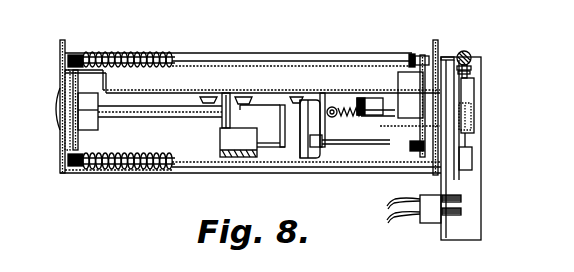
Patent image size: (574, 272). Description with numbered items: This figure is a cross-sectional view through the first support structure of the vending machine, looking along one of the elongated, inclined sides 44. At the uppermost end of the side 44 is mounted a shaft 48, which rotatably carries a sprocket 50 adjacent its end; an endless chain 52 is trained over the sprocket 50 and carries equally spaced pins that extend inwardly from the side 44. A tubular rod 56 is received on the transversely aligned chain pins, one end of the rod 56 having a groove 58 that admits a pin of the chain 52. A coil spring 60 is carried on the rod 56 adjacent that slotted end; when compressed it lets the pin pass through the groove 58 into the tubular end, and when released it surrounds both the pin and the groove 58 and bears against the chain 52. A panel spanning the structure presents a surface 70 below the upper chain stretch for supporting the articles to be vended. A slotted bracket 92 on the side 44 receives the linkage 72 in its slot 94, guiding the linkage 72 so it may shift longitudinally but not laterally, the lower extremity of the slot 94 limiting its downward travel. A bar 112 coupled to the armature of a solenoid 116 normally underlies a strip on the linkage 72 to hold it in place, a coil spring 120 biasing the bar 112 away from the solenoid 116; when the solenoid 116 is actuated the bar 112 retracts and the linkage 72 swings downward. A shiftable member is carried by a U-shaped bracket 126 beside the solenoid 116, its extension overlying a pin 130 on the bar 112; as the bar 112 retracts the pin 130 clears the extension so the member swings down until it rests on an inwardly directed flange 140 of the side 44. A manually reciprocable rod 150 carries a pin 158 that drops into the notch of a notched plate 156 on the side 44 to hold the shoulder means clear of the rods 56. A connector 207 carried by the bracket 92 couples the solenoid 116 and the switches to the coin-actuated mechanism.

The side 44 is at (62, 63).
The shaft 48 is at (139, 115).
The sprocket 50 is at (62, 146).
The chain 52 is at (78, 46).
The tubular rod 56 is at (240, 58).
The groove 58 is at (97, 55).
The coil spring 60 is at (167, 52).
The surface 70 is at (207, 92).
The linkage 72 is at (471, 127).
The slotted bracket 92 is at (474, 195).
The slot 94 is at (467, 92).
The bar 112 is at (383, 96).
The solenoid 116 is at (268, 113).
The coil spring 120 is at (387, 63).
The U-shaped bracket 126 is at (312, 95).
The pin 130 is at (365, 130).
The flange 140 is at (80, 176).
The rod 150 is at (474, 48).
The notched plate 156 is at (471, 71).
The pin 158 is at (474, 60).
The connector 207 is at (427, 223).